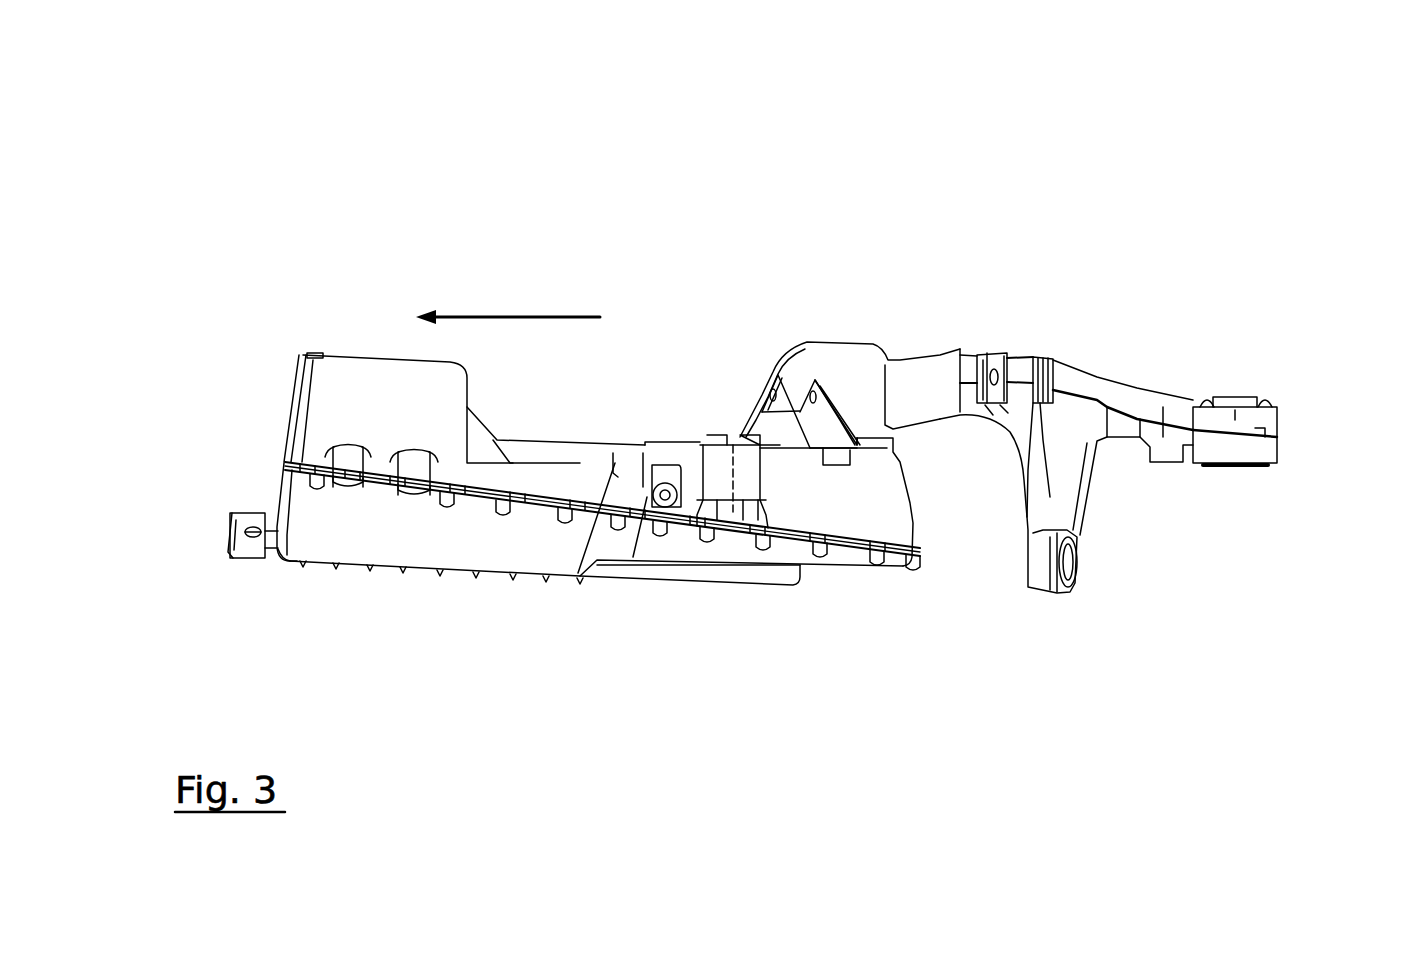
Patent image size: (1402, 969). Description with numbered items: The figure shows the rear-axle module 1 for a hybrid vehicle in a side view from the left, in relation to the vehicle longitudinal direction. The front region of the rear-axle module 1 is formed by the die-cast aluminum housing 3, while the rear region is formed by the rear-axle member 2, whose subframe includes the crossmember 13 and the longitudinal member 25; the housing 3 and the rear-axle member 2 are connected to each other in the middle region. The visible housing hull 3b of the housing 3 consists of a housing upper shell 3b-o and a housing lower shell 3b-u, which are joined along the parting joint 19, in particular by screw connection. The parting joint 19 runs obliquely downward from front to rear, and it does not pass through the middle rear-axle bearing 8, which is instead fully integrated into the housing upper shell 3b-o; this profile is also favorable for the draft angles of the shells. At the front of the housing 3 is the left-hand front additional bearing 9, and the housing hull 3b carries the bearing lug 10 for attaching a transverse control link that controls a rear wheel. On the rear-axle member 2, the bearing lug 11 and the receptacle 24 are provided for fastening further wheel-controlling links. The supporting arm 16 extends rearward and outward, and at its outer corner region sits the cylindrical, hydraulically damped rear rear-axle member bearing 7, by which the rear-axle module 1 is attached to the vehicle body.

The rear-axle module 1 is at (612, 172).
The rear-axle member 2 is at (942, 330).
The housing 3 is at (403, 334).
The housing hull 3b is at (372, 421).
The housing upper shell 3b-o is at (345, 390).
The housing lower shell 3b-u is at (388, 523).
The rear rear-axle member bearing 7 is at (1236, 400).
The middle rear-axle bearing 8 is at (722, 472).
The front additional bearing 9 is at (237, 515).
The bearing lug 10 is at (827, 428).
The bearing lug 11 is at (1007, 352).
The crossmember 13 is at (848, 362).
The rear supporting arm 16 is at (1162, 405).
The parting joint 19 is at (540, 503).
The receptacle 24 is at (1067, 562).
The longitudinal member 25 is at (920, 388).